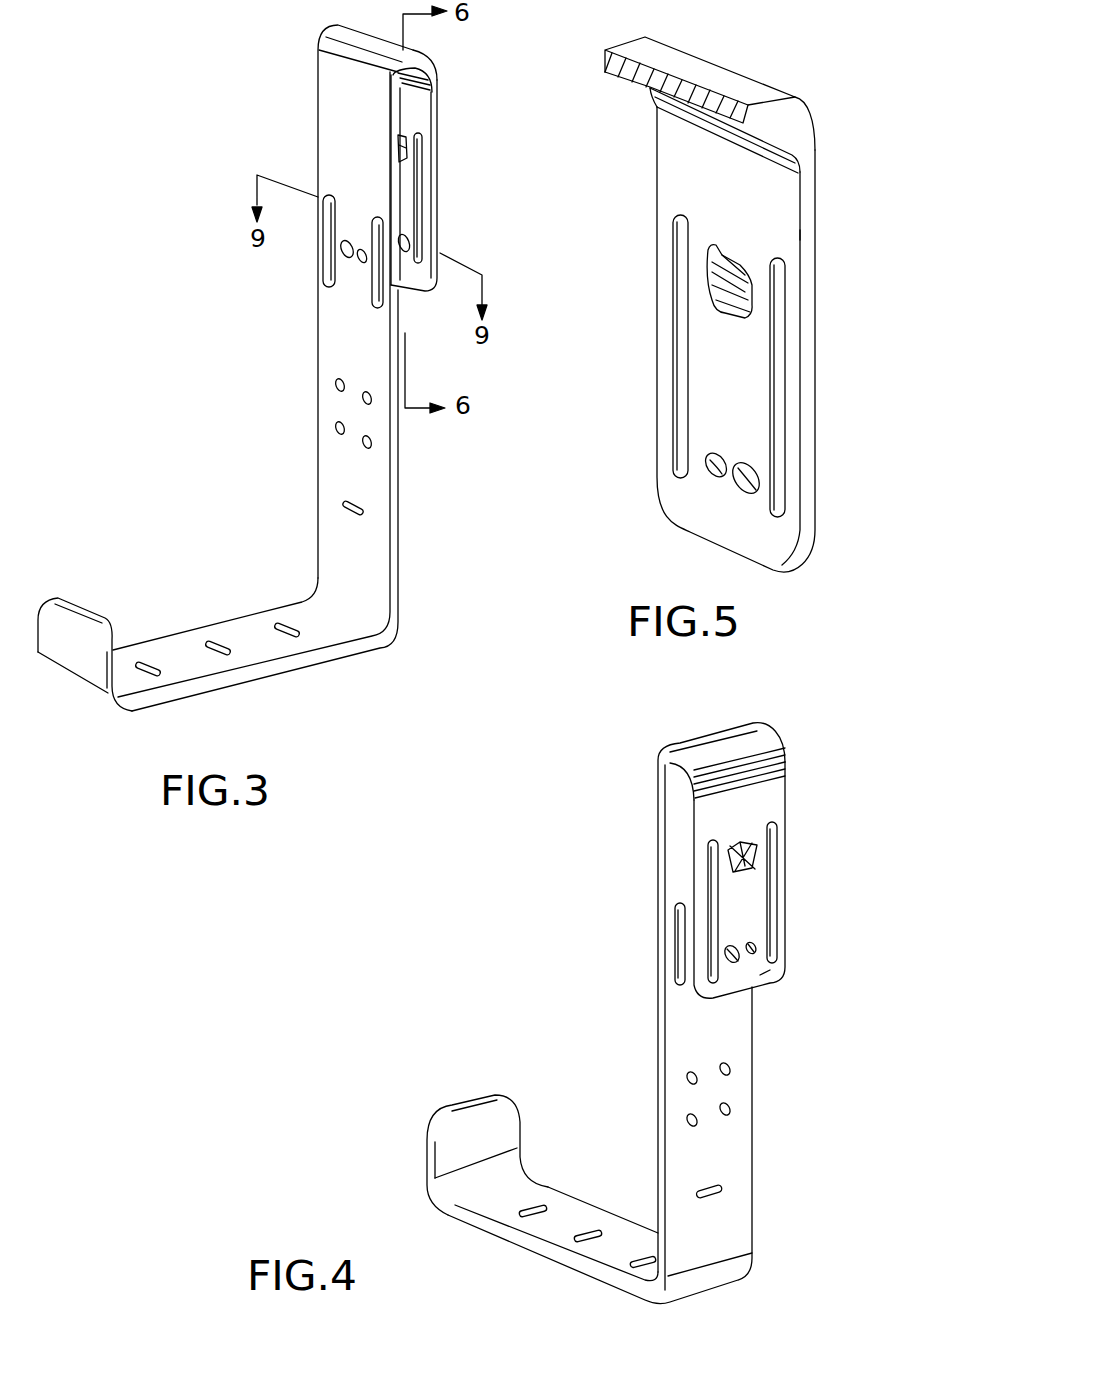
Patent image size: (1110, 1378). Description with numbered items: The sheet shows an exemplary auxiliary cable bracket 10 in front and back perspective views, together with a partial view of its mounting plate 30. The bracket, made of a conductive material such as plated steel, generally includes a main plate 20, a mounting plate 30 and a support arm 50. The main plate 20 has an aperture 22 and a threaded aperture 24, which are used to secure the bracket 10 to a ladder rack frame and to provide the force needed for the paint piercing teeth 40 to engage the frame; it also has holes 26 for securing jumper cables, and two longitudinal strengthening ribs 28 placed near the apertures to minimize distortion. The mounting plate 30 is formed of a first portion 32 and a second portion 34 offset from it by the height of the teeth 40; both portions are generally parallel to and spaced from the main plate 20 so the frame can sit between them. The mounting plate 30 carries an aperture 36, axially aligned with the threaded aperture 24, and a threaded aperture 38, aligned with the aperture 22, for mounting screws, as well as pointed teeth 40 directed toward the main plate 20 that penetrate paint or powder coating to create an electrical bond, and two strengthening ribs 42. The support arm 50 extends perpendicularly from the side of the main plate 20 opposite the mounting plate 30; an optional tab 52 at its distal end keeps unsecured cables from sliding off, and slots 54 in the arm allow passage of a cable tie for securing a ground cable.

In FIG. 3, the auxiliary cable bracket 10 is at (268, 116).
In FIG. 4, the auxiliary cable bracket 10 is at (628, 818).
In FIG. 3, the main plate 20 is at (350, 350).
In FIG. 4, the main plate 20 is at (687, 1007).
In FIG. 3, the aperture 22 is at (343, 253).
In FIG. 3, the threaded aperture 24 is at (362, 265).
In FIG. 3, the holes 26 is at (362, 398).
In FIG. 4, the holes 26 is at (697, 1083).
In FIG. 3, the strengthening ribs 28 is at (325, 235).
In FIG. 5, the strengthening ribs 28 is at (533, 394).
In FIG. 3, the mounting plate 30 is at (426, 112).
In FIG. 5, the mounting plate 30 is at (692, 195).
In FIG. 4, the mounting plate 30 is at (776, 803).
In FIG. 3, the first portion 32 is at (437, 70).
In FIG. 5, the first portion 32 is at (802, 123).
In FIG. 4, the first portion 32 is at (770, 740).
In FIG. 3, the second portion 34 is at (410, 184).
In FIG. 5, the second portion 34 is at (793, 233).
In FIG. 4, the second portion 34 is at (770, 970).
In FIG. 3, the aperture 36 is at (402, 231).
In FIG. 5, the aperture 36 is at (737, 490).
In FIG. 4, the aperture 36 is at (740, 962).
In FIG. 5, the threaded aperture 38 is at (703, 472).
In FIG. 4, the threaded aperture 38 is at (757, 950).
In FIG. 5, the paint piercing teeth 40 is at (723, 253).
In FIG. 4, the strengthening ribs 42 is at (713, 873).
In FIG. 4, the support arm 50 is at (540, 1228).
In FIG. 3, the tab 52 is at (67, 643).
In FIG. 4, the tab 52 is at (477, 1123).
In FIG. 3, the slots 54 is at (345, 512).
In FIG. 4, the slots 54 is at (528, 1208).